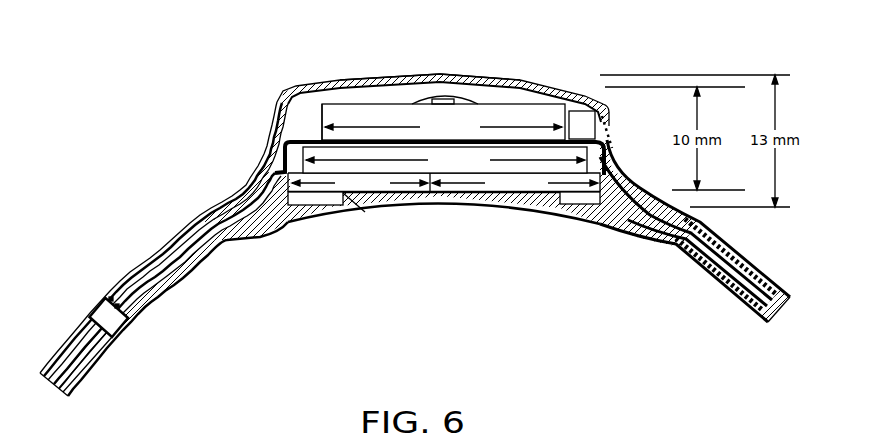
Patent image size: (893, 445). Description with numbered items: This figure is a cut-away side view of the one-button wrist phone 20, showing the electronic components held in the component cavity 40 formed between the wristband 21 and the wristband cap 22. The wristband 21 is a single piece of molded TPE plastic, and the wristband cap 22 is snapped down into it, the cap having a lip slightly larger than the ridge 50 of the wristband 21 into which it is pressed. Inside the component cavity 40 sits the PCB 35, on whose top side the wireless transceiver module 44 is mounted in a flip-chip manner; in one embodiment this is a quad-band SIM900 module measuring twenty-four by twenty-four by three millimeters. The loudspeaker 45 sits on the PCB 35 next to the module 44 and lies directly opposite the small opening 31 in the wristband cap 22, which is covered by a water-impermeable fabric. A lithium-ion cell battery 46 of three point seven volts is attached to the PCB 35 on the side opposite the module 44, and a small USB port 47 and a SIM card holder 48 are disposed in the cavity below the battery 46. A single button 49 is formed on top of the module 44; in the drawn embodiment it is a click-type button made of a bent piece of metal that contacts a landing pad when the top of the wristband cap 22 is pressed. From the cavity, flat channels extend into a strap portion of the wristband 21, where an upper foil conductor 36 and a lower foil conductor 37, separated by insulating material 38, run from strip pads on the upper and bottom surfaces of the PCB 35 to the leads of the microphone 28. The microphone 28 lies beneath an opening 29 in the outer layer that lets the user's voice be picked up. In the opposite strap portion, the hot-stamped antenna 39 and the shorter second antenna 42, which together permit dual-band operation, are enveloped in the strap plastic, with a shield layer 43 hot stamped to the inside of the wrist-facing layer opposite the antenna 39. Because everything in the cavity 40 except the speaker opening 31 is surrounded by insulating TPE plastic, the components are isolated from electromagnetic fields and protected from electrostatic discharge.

The one-button wrist phone 20 is at (157, 88).
The wristband 21 is at (464, 204).
The wristband cap 22 is at (309, 91).
The microphone 28 is at (100, 306).
The opening 29 is at (80, 301).
The opening for speaker 31 is at (624, 121).
The PCB 35 is at (307, 141).
The upper foil conductor 36 is at (190, 225).
The lower foil conductor 37 is at (188, 254).
The insulating material 38 is at (162, 275).
The antenna 39 is at (750, 270).
The component cavity 40 is at (306, 210).
The second antenna 42 is at (719, 263).
The shield layer 43 is at (703, 268).
The wireless transceiver module 44 is at (504, 103).
The loudspeaker 45 is at (591, 134).
The lithium-ion cell battery 46 is at (266, 165).
The small USB port 47 is at (351, 206).
The SIM card holder 48 is at (566, 206).
The single button 49 is at (414, 66).
The ridge 50 is at (641, 168).